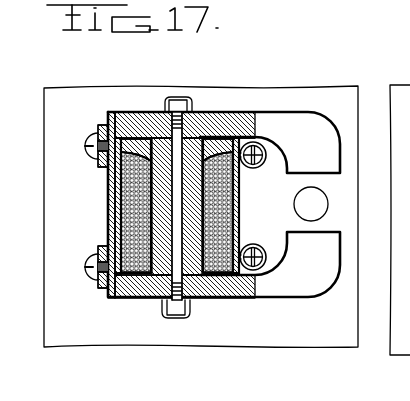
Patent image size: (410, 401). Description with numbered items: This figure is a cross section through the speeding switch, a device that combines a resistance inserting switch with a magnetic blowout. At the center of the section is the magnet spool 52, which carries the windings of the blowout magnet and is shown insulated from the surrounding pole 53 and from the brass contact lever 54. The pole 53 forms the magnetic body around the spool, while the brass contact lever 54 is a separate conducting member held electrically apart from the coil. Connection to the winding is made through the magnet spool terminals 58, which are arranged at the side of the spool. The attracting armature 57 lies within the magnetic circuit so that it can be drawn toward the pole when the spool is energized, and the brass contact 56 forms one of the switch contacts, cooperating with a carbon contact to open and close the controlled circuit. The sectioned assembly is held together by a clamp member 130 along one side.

The magnet spool 52 is at (234, 213).
The pole 53 is at (229, 122).
The brass contact lever 54 is at (95, 163).
The brass contact 56 is at (316, 222).
The attracting armature 57 is at (110, 200).
The magnet spool terminals 58 is at (266, 150).
The clamp bracket 130 is at (262, 296).